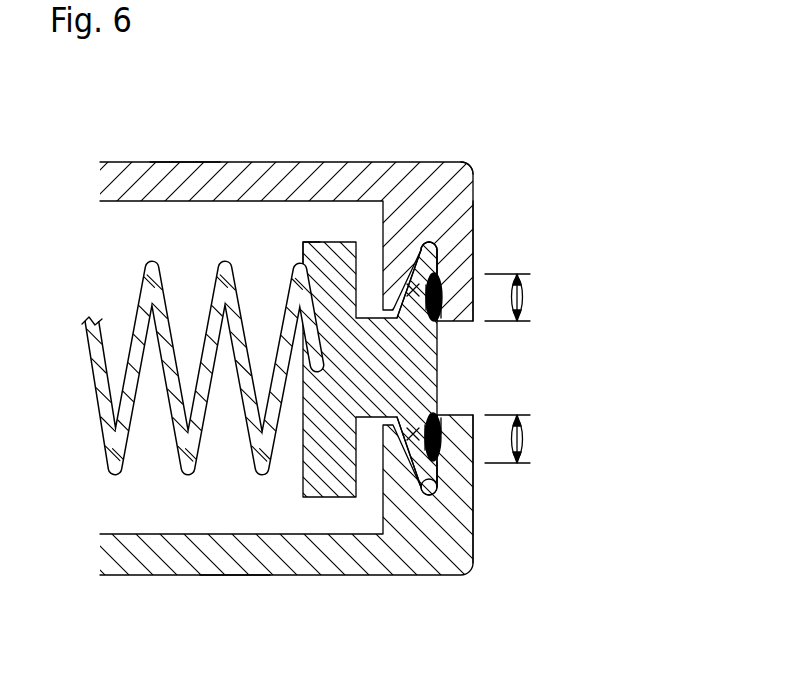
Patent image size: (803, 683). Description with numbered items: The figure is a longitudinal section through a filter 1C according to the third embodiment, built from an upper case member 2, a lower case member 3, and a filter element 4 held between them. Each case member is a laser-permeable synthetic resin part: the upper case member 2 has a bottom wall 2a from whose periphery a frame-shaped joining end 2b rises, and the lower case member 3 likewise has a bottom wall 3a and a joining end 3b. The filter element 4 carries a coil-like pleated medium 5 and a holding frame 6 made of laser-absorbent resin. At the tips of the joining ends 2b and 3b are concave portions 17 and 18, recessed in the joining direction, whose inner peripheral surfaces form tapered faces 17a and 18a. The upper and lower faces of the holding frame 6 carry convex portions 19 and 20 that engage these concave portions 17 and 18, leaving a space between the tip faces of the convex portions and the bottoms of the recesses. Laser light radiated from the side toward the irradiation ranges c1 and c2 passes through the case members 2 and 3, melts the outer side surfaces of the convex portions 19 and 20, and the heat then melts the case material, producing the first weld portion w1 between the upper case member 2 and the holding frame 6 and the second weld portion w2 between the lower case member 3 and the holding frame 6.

The filter 1C is at (558, 183).
The upper case member 2 is at (133, 162).
The bottom wall 2a is at (180, 162).
The joining end 2b is at (475, 188).
The lower case member 3 is at (165, 575).
The bottom wall 3a is at (225, 560).
The joining end 3b is at (458, 507).
The filter element 4 is at (318, 240).
The coil spring 5 is at (168, 280).
The holding frame 6 is at (302, 256).
The concave portion 17 is at (422, 262).
The tapered face 17a is at (408, 290).
The concave portion 18 is at (414, 456).
The tapered face 18a is at (410, 440).
The convex portion 19 is at (438, 272).
The convex portion 20 is at (430, 465).
The laser light irradiation range c1 is at (524, 292).
The laser light irradiation range c2 is at (524, 447).
The first weld portion w1 is at (441, 302).
The second weld portion w2 is at (442, 432).